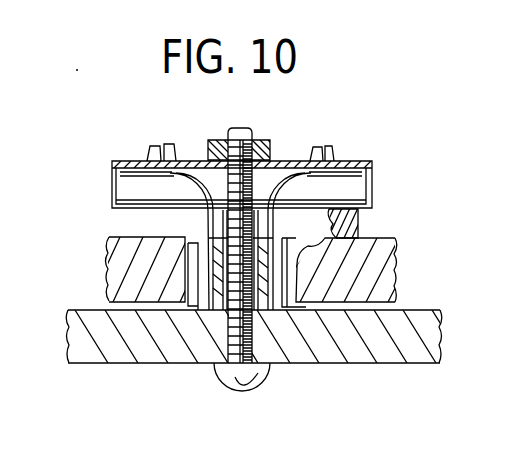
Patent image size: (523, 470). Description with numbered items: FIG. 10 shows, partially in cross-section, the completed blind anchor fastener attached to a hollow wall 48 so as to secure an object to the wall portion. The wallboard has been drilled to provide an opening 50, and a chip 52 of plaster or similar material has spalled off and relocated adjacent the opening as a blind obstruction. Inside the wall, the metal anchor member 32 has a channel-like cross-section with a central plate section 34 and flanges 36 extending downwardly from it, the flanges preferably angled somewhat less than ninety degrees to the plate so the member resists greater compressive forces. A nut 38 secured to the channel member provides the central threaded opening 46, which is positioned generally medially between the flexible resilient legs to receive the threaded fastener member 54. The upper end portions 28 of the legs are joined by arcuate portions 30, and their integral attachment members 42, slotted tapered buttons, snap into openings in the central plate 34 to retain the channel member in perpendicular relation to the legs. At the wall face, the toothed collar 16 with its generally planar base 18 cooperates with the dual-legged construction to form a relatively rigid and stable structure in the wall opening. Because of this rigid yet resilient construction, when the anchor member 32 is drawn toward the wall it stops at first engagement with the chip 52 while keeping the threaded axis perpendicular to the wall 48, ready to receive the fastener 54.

The collar 16 is at (186, 260).
The base 18 is at (300, 310).
The upper end portions 28 is at (138, 175).
The arcuate portions 30 is at (200, 184).
The anchor member 32 is at (403, 171).
The central plate section 34 is at (372, 162).
The flanges 36 is at (362, 197).
The nut 38 is at (265, 140).
The attachment members 42 is at (160, 150).
The central threaded opening 46 is at (229, 130).
The hollow wall 48 is at (373, 262).
The opening 50 is at (189, 305).
The chip 52 is at (359, 226).
The threaded fastener member 54 is at (234, 377).